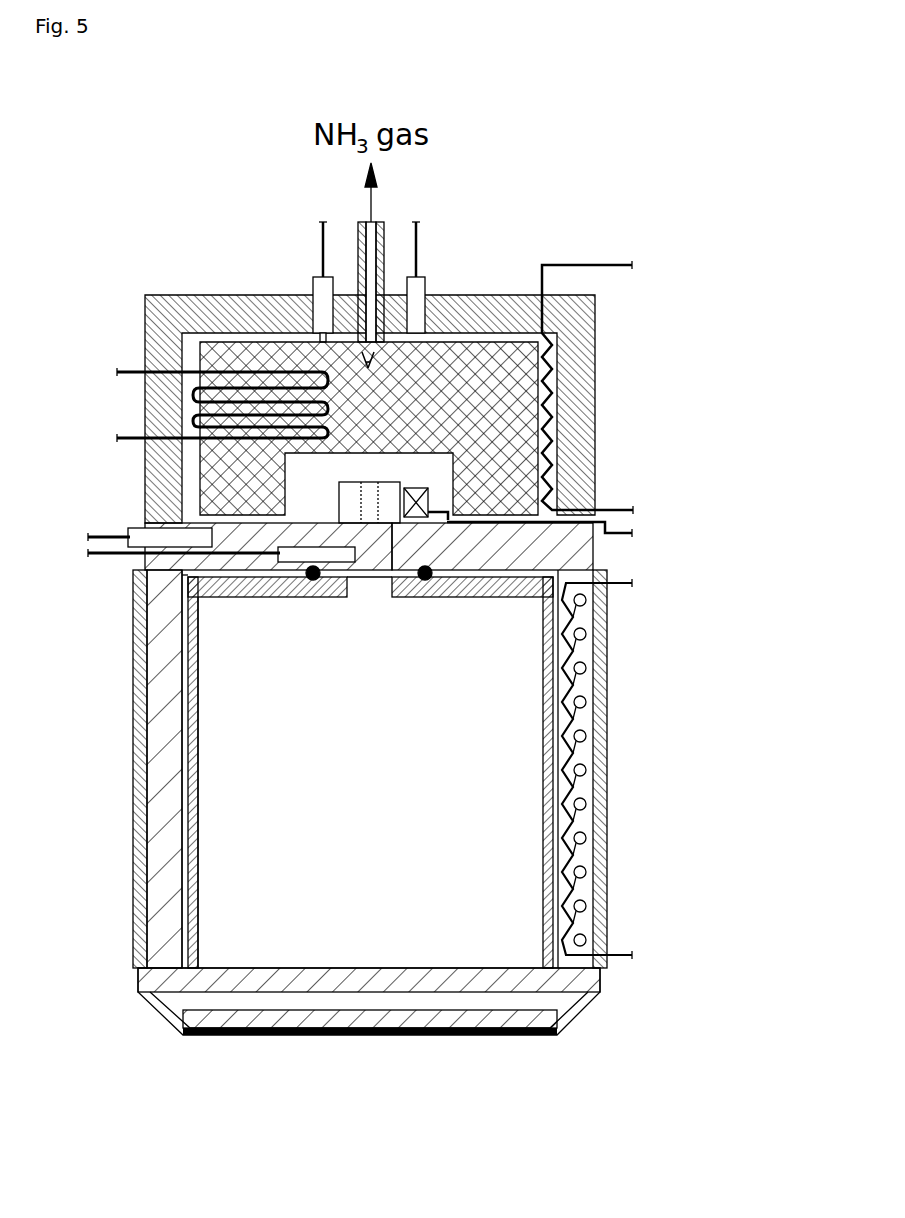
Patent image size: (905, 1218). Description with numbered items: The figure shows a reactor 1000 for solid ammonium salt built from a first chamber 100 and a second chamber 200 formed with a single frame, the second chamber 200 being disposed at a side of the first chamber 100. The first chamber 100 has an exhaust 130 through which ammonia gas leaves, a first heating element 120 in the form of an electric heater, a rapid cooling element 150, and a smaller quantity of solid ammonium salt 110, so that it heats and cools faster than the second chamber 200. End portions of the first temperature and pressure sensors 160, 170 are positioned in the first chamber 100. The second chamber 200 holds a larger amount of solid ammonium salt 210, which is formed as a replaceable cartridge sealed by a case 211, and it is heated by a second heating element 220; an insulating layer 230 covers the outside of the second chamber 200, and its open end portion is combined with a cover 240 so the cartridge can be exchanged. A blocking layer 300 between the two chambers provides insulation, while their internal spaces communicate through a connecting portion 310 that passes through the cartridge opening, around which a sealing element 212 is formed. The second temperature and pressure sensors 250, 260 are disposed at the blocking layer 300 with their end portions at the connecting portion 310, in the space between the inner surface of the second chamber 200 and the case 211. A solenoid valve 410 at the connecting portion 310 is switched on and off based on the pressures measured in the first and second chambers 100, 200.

The reactor for solid ammonium salt 1000 is at (524, 100).
The first chamber 100 is at (183, 293).
The solid ammonium salt 110 is at (200, 476).
The first heating element 120 is at (560, 405).
The exhaust 130 is at (382, 225).
The rapid cooling element 150 is at (150, 357).
The first temperature sensor 160 is at (312, 283).
The first pressure sensor 170 is at (427, 287).
The second chamber 200 is at (160, 765).
The solid ammonium salt 210 is at (233, 883).
The case 211 is at (257, 995).
The sealing element 212 is at (197, 630).
The second heating element 220 is at (602, 810).
The insulating layer 230 is at (602, 710).
The cover 240 is at (356, 1018).
The second temperature sensor 250 is at (130, 527).
The second pressure sensor 260 is at (182, 602).
The blocking layer 300 is at (598, 540).
The connecting portion 310 is at (375, 553).
The solenoid valve 410 is at (399, 482).